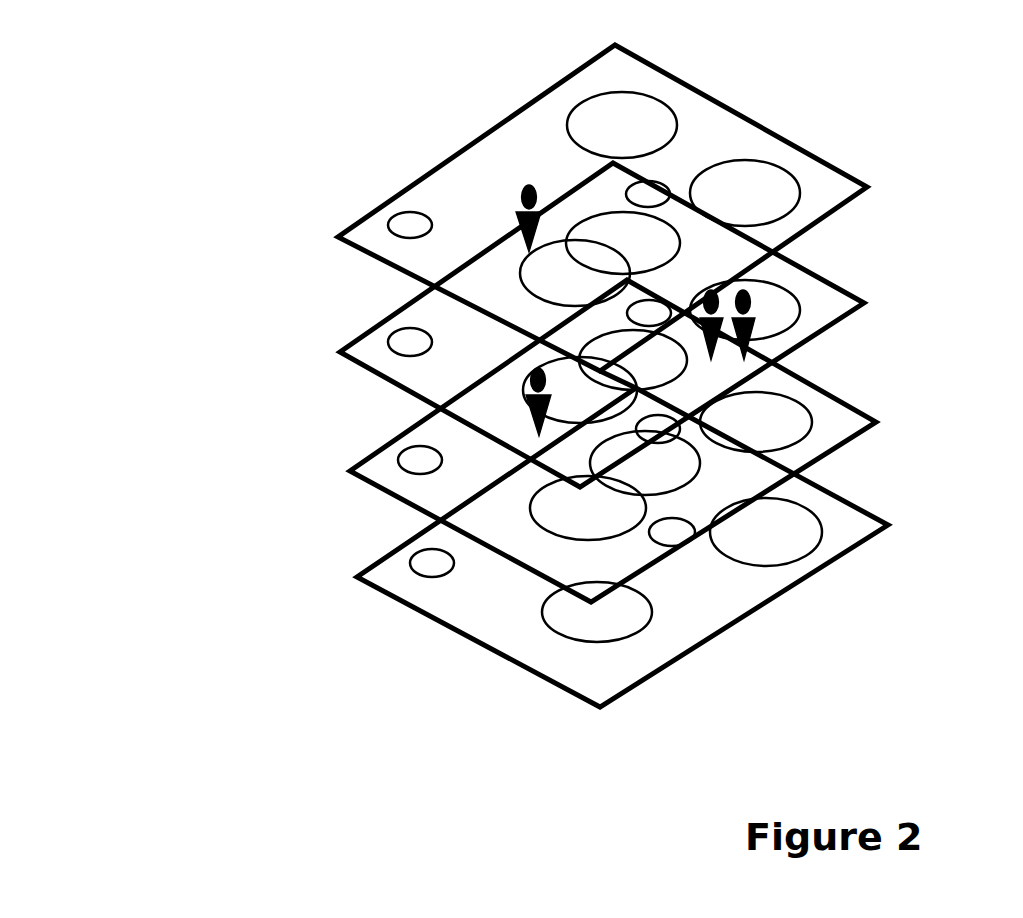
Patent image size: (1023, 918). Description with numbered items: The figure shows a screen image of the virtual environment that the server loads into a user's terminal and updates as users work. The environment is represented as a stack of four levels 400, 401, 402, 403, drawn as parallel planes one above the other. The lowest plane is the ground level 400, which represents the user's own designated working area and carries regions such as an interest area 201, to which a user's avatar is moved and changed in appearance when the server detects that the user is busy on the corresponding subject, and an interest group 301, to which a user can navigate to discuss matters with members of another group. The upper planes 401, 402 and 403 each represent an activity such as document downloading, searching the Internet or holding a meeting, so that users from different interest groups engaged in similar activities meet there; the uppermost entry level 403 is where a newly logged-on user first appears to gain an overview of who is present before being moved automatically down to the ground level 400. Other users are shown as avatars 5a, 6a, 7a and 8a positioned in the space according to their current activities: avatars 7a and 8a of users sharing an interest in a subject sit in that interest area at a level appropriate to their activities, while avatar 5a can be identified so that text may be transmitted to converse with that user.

The ground level 400 is at (727, 622).
The level 401 is at (876, 414).
The level 402 is at (853, 288).
The entry level 403 is at (862, 172).
The interest area 201 is at (612, 536).
The interest group 301 is at (585, 643).
The avatar 5a is at (720, 348).
The avatar 6a is at (755, 321).
The avatar 7a is at (528, 422).
The avatar 8a is at (531, 185).